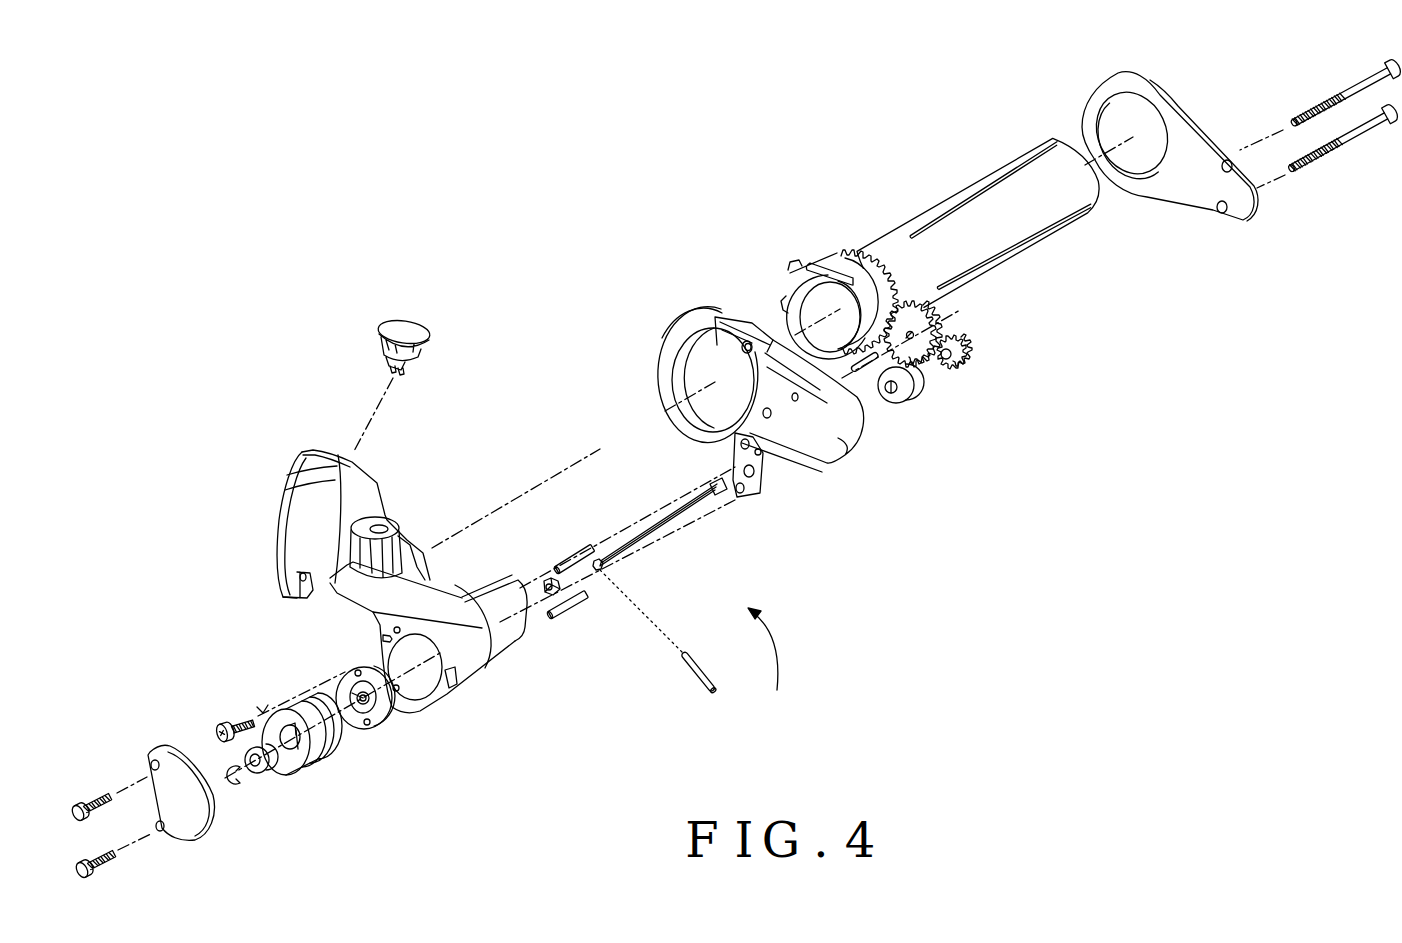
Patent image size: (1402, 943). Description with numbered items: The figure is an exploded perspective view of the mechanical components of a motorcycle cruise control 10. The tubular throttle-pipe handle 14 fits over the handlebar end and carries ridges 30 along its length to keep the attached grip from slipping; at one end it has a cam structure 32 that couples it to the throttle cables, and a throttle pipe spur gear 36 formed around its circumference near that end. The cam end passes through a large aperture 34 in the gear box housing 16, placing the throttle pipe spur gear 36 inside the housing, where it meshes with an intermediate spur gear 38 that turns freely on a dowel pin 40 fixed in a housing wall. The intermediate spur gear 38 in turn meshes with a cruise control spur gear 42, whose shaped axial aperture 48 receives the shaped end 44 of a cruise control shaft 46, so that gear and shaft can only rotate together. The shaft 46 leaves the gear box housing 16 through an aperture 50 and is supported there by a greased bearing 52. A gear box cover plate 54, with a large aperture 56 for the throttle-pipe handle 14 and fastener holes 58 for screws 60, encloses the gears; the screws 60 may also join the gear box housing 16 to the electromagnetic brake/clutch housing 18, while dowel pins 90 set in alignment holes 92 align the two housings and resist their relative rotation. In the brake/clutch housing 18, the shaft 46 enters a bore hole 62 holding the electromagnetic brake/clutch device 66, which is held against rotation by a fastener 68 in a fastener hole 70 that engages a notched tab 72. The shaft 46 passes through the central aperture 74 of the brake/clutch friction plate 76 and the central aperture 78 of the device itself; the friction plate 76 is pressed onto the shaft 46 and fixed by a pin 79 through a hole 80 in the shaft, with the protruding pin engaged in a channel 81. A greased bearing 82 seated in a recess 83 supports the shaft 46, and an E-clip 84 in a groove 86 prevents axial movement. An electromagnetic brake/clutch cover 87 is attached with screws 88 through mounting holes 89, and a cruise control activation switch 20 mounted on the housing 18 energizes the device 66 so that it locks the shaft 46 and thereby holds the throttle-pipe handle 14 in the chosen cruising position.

The motorcycle cruise control 10 is at (771, 671).
The throttle-pipe handle 14 is at (1050, 225).
The gear box housing 16 is at (690, 317).
The electromagnetic brake/clutch housing 18 is at (460, 674).
The cruise control activation switch 20 is at (424, 329).
The ridges 30 is at (982, 190).
The cam structure 32 is at (788, 274).
The large aperture 34 is at (687, 360).
The throttle pipe spur gear 36 is at (837, 250).
The intermediate spur gear 38 is at (933, 316).
The dowel pin 40 is at (862, 373).
The cruise control spur gear 42 is at (970, 357).
The end of cruise control shaft 44 is at (713, 488).
The cruise control shaft 46 is at (655, 528).
The aperture 48 is at (942, 364).
The aperture 50 is at (750, 500).
The greased bearing 52 is at (896, 404).
The gear box cover plate 54 is at (1167, 103).
The large aperture 56 is at (1112, 118).
The fastener holes 58 is at (1222, 213).
The screws 60 is at (1308, 167).
The bore hole 62 is at (430, 690).
The electromagnetic brake/clutch device 66 is at (307, 697).
The fastener 68 is at (246, 723).
The fastener hole 70 is at (383, 638).
The notched tab 72 is at (264, 708).
The central aperture 74 is at (364, 711).
The brake/clutch friction plate 76 is at (390, 714).
The central aperture 78 is at (300, 770).
The pin 79 is at (695, 675).
The hole 80 is at (600, 565).
The channel 81 is at (352, 693).
The greased bearing 82 is at (259, 775).
The recess 83 is at (291, 750).
The E-clip 84 is at (234, 784).
The groove 86 is at (543, 582).
The electromagnetic brake/clutch cover 87 is at (153, 750).
The screws 88 is at (102, 804).
The mounting holes 89 is at (160, 831).
The dowel pins 90 is at (572, 552).
The alignment holes 92 is at (761, 456).